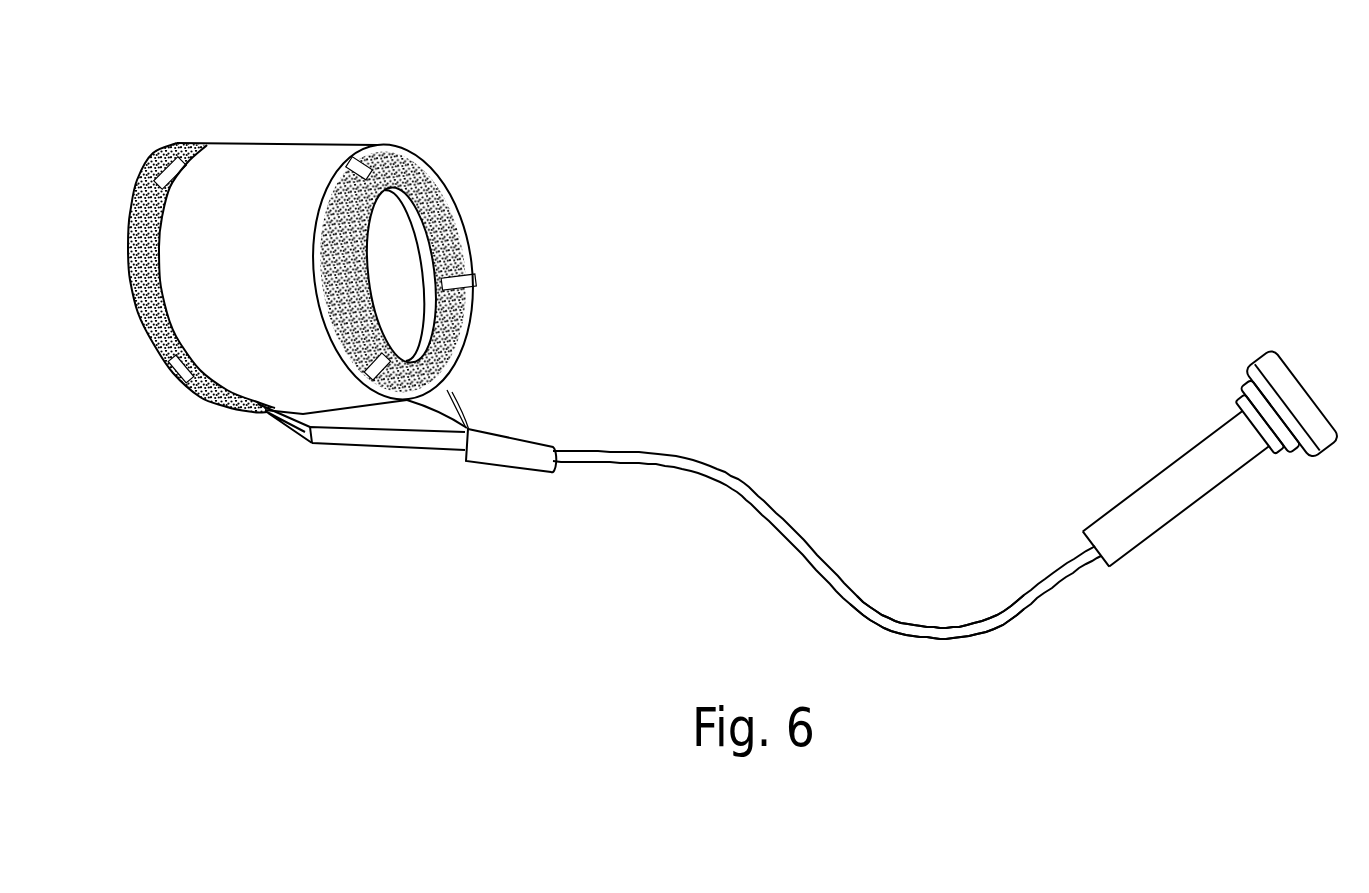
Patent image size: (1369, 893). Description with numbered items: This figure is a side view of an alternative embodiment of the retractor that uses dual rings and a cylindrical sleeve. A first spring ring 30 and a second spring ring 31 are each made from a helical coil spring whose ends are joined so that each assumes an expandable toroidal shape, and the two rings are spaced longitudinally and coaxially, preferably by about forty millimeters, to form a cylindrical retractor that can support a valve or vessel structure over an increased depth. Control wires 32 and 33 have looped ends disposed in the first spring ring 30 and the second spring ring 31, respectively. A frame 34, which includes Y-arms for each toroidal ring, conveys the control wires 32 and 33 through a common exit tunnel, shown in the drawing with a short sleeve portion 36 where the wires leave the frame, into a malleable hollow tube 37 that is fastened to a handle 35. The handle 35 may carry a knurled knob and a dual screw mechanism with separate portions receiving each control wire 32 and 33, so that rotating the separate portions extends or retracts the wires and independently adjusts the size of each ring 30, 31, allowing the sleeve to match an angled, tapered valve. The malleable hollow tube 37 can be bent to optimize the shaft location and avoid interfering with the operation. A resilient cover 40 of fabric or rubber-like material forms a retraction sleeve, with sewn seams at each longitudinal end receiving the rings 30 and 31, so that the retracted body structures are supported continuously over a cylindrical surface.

The first spring ring 30 is at (423, 167).
The second spring ring 31 is at (175, 143).
The control wire 32 is at (468, 238).
The control wire 33 is at (155, 353).
The frame 34 is at (782, 494).
The handle 35 is at (1282, 377).
The strain relief sleeve 36 is at (517, 455).
The malleable hollow tube 37 is at (937, 632).
The resilient cover 40 is at (255, 163).